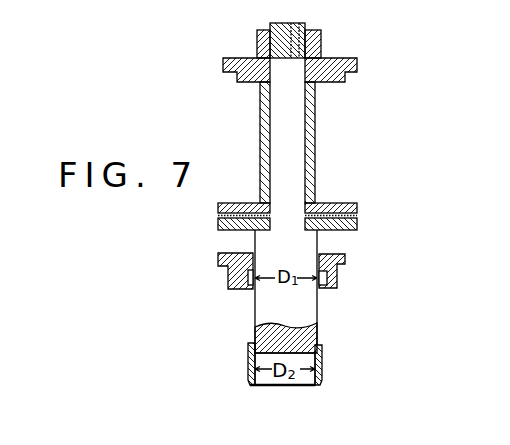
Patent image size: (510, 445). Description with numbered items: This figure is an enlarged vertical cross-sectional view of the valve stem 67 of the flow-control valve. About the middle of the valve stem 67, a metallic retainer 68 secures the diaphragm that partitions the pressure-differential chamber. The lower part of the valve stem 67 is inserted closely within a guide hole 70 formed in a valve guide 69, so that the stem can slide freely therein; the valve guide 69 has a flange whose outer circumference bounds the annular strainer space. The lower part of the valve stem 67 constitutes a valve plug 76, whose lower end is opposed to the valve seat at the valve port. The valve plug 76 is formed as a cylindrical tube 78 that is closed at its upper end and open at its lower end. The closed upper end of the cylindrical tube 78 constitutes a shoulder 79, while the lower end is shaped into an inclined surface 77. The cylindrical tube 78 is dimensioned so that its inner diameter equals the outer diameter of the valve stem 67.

The valve stem 67 is at (302, 122).
The metallic retainer 68 is at (340, 207).
The valve guide 69 is at (340, 255).
The guide hole 70 is at (253, 255).
The valve plug 76 is at (323, 362).
The inclined surface 77 is at (252, 383).
The cylindrical tube 78 is at (249, 352).
The shoulder 79 is at (318, 343).